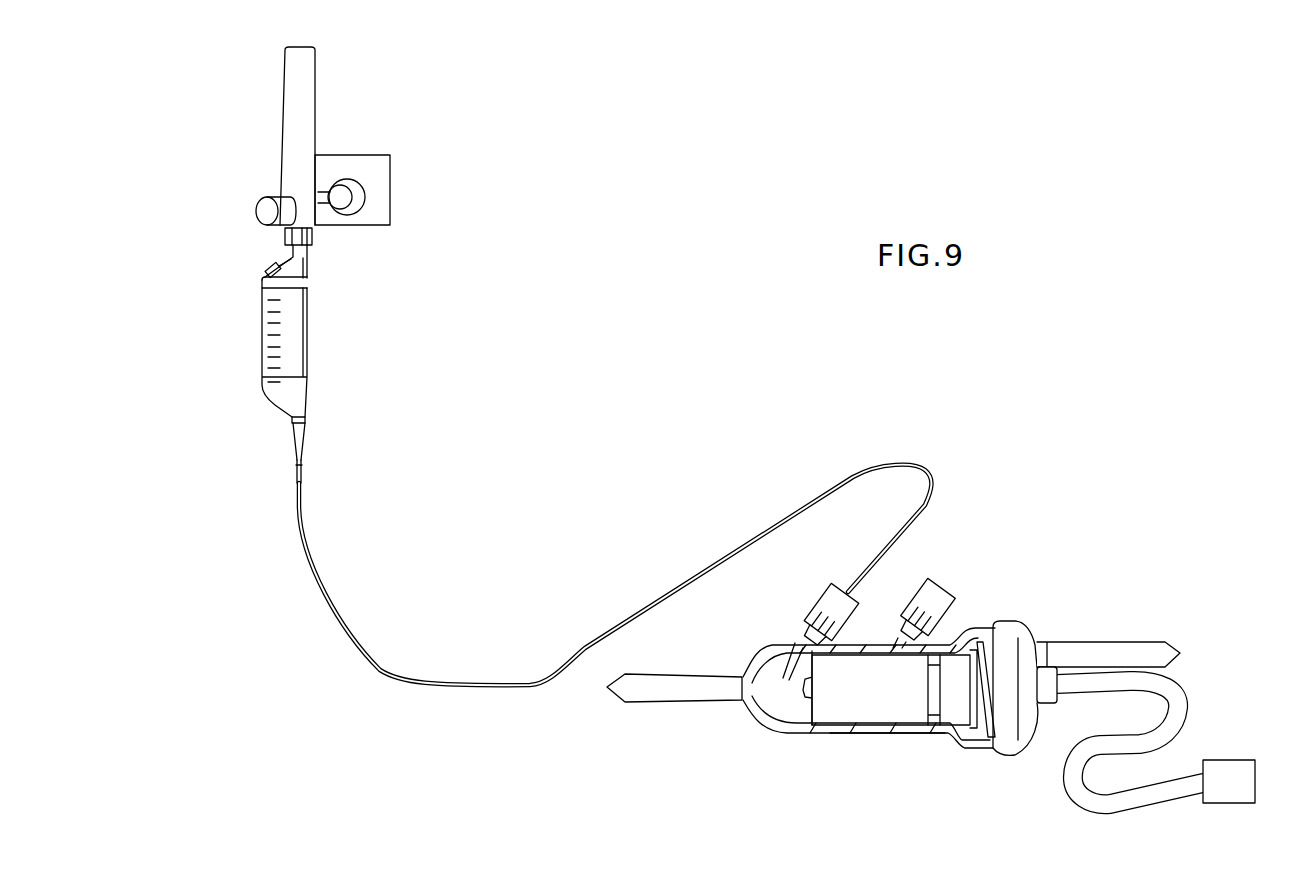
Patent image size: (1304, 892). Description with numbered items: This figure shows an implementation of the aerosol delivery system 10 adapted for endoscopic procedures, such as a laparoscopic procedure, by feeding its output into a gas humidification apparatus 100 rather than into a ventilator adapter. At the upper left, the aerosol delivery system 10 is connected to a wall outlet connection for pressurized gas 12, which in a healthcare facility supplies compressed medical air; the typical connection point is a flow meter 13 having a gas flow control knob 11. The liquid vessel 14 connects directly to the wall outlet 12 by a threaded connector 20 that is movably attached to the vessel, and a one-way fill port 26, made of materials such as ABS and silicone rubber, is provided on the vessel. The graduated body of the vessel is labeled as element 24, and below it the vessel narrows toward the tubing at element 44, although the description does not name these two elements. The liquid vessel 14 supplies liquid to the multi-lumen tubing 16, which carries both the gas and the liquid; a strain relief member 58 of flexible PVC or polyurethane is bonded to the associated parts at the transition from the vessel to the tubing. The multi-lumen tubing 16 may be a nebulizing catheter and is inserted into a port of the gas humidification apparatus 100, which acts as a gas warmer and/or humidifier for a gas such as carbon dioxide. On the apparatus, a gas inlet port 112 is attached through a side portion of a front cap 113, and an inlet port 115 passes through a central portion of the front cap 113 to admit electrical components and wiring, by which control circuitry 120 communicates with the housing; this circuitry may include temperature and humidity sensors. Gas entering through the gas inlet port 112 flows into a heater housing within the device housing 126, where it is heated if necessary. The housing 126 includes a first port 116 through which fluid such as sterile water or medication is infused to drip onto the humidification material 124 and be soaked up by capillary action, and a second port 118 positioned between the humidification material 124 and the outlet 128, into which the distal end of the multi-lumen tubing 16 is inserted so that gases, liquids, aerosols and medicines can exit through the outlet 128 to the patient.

The aerosol delivery system 10 is at (208, 225).
The gas flow control knob 11 is at (262, 203).
The wall outlet connection for pressurized gas 12 is at (380, 166).
The flow meter 13 is at (315, 77).
The liquid vessel 14 is at (333, 287).
The multi-lumen tubing 16 is at (396, 676).
The threaded connector 20 is at (312, 238).
The drip chamber 24 is at (307, 333).
The one-way fill port 26 is at (267, 262).
The tapered outlet 44 is at (304, 436).
The strain relief member 58 is at (302, 468).
The gas humidification apparatus 100 is at (1015, 600).
The gas inlet port 112 is at (1037, 640).
The front cap 113 is at (1018, 627).
The inlet port 115 is at (1045, 690).
The first port 116 is at (932, 593).
The second port 118 is at (833, 587).
The control circuitry 120 is at (1250, 790).
The humidification material 124 is at (828, 715).
The device housing 126 is at (868, 733).
The outlet 128 is at (748, 712).